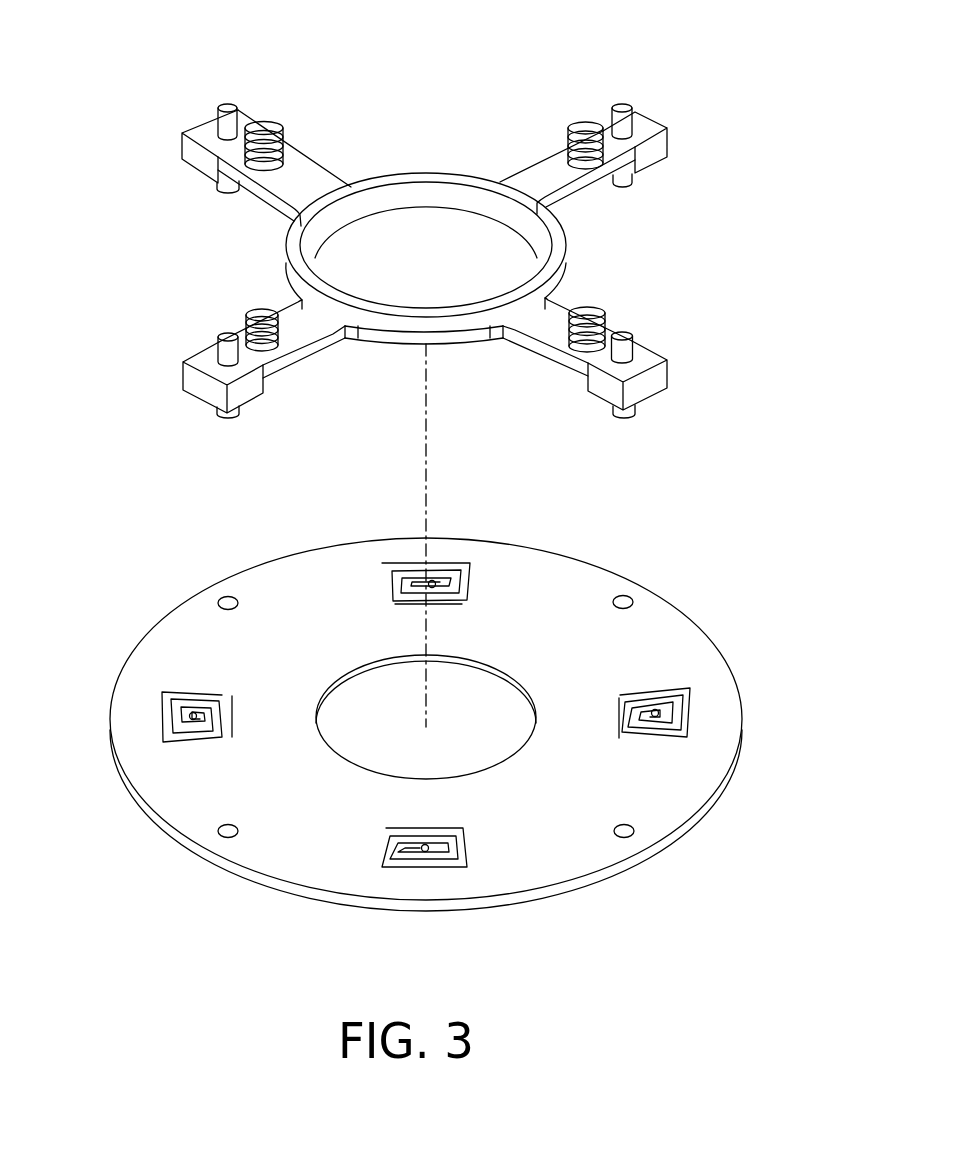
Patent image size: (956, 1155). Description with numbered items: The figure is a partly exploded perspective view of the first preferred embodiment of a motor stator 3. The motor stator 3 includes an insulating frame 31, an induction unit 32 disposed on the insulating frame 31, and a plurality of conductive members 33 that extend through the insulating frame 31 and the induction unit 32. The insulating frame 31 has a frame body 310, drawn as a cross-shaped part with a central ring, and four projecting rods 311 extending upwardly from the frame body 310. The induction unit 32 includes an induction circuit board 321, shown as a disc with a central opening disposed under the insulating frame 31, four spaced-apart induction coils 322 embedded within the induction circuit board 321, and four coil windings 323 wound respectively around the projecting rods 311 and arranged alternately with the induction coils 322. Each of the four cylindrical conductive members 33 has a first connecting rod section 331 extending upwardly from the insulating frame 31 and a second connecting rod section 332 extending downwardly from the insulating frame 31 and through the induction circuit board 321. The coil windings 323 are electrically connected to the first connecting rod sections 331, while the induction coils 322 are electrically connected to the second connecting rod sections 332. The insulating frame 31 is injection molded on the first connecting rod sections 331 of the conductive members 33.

The motor stator 3 is at (740, 256).
The insulating frame 31 is at (421, 146).
The frame body 310 is at (530, 350).
The projecting rods 311 is at (262, 126).
The coil windings 323 is at (294, 146).
The conductive members 33 is at (227, 76).
The first connecting rod section 331 is at (219, 107).
The second connecting rod section 332 is at (224, 194).
The induction unit 32 is at (130, 842).
The induction circuit board 321 is at (178, 625).
The induction coils 322 is at (388, 575).